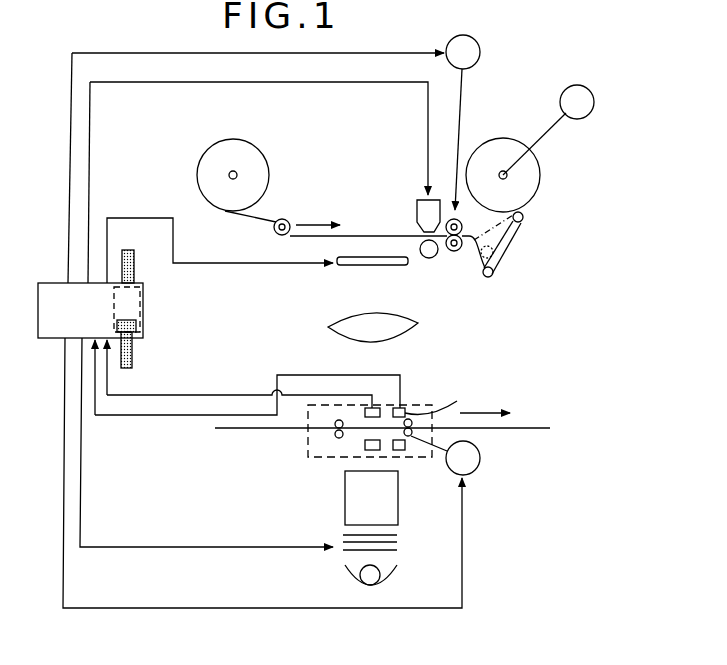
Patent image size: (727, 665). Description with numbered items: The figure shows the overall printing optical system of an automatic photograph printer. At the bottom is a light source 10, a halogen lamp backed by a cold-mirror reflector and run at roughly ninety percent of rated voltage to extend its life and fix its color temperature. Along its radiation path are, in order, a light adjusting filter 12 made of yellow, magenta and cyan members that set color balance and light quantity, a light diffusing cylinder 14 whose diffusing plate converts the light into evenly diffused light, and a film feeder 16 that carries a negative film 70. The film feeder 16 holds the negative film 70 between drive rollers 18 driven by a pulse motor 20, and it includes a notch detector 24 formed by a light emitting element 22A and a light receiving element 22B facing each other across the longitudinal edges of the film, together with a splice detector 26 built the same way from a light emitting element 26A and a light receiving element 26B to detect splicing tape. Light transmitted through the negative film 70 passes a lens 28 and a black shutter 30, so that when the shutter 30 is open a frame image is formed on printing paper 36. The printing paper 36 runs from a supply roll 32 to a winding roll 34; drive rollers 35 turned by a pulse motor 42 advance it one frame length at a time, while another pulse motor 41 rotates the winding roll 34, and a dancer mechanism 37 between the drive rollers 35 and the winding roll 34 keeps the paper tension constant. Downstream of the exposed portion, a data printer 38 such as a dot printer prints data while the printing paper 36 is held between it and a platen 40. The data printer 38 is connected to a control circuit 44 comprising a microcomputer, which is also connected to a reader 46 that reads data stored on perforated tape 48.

The light source 10 is at (345, 575).
The light adjusting filter 12 is at (400, 546).
The light diffusing cylinder 14 is at (345, 512).
The film feeder 16 is at (433, 405).
The drive rollers 18 is at (411, 441).
The pulse motor 20 is at (480, 466).
The light emitting element 22A is at (365, 446).
The light receiving element 22B is at (365, 412).
The notch detector 24 is at (389, 405).
The splice detector 26 is at (446, 401).
The light emitting element 26A is at (397, 450).
The light receiving element 26B is at (406, 408).
The lens 28 is at (420, 322).
The black shutter 30 is at (397, 266).
The supply roll 32 is at (262, 177).
The winding roll 34 is at (533, 203).
The drive rollers 35 is at (449, 207).
The printing paper 36 is at (508, 243).
The dancer mechanism 37 is at (508, 266).
The data printer 38 is at (417, 206).
The platen 40 is at (434, 257).
The pulse motor 41 is at (588, 119).
The pulse motor 42 is at (480, 44).
The control circuit 44 is at (45, 338).
The reader 46 is at (141, 308).
The perforated tape 48 is at (133, 355).
The negative film 70 is at (546, 428).